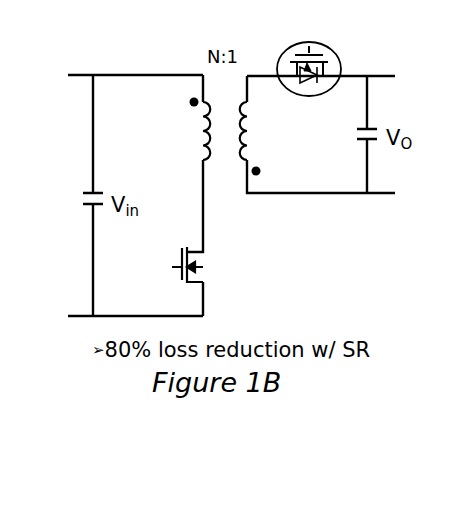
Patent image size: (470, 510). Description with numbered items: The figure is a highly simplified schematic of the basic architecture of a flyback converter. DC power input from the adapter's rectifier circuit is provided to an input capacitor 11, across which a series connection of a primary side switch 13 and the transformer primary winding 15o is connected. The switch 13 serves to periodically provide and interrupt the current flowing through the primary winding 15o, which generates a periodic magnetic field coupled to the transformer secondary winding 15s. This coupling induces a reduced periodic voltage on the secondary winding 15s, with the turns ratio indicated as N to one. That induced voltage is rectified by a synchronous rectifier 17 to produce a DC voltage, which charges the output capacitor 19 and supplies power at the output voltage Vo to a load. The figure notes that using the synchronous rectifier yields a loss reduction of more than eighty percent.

The input capacitor 11 is at (85, 193).
The primary side switch 13 is at (180, 258).
The transformer primary winding 15o is at (203, 135).
The transformer secondary winding 15s is at (247, 131).
The synchronous rectifier 17 is at (328, 45).
The output capacitor 19 is at (369, 129).